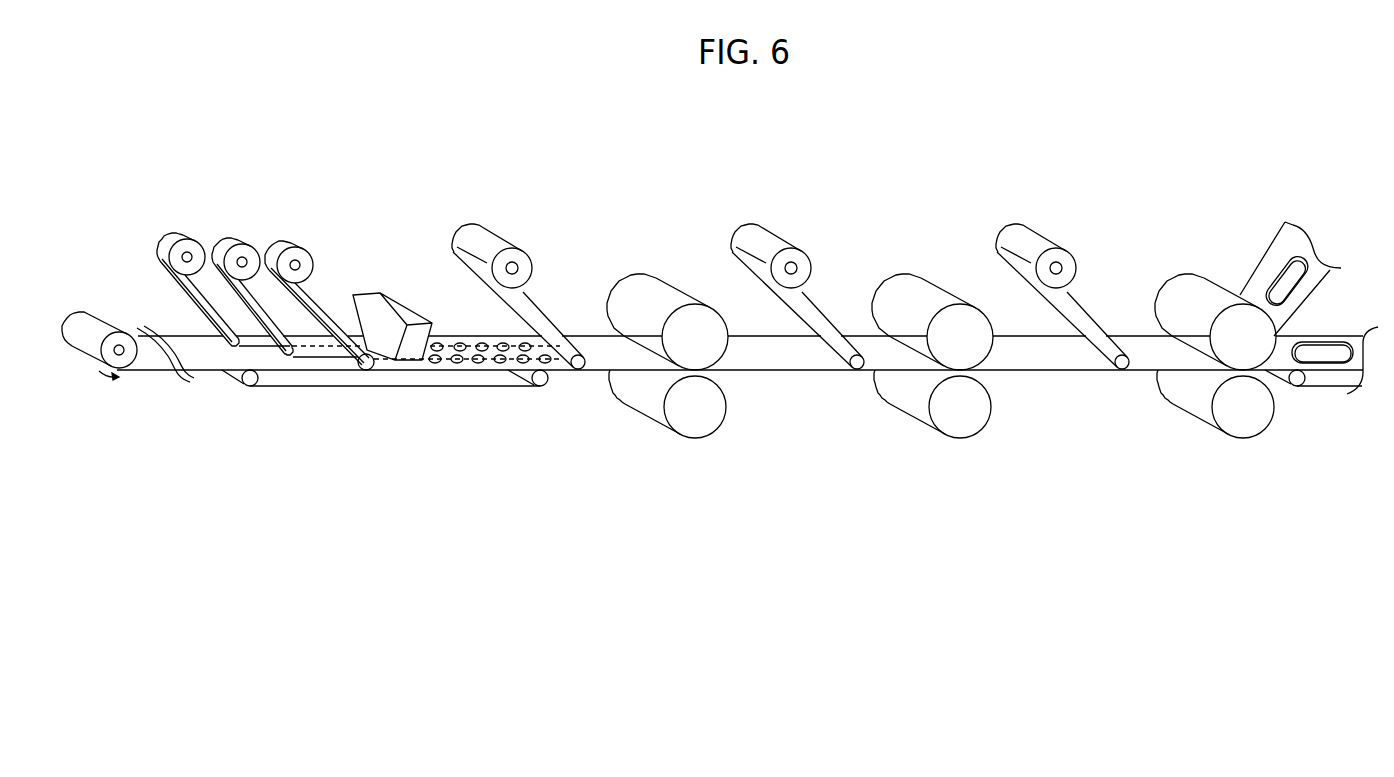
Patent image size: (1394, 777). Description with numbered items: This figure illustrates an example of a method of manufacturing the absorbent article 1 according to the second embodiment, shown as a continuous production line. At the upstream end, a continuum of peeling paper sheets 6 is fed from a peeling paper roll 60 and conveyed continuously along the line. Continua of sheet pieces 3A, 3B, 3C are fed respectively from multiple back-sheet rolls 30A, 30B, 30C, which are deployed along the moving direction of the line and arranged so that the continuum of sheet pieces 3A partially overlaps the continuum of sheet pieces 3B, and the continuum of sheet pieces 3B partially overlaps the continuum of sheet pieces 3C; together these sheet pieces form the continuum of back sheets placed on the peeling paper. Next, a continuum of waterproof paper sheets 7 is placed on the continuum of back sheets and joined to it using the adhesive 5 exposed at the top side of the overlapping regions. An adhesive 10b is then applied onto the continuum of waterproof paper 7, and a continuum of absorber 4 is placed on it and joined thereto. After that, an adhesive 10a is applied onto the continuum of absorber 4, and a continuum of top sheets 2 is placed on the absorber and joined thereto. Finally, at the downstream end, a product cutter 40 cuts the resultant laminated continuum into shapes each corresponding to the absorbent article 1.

The absorbent article 1 is at (1341, 346).
The continuum of top sheets 2 is at (1067, 308).
The continuum of sheet pieces 3A is at (178, 297).
The continuum of sheet pieces 3B is at (236, 307).
The continuum of sheet pieces 3C is at (312, 300).
The continuum of absorber 4 is at (802, 308).
The adhesive 5 is at (483, 345).
The continuum of peeling paper sheets 6 is at (149, 358).
The continuum of waterproof paper sheets 7 is at (524, 308).
The adhesive 10a is at (1018, 353).
The adhesive 10b is at (758, 353).
The back-sheet roll 30A is at (175, 234).
The back-sheet roll 30B is at (233, 239).
The back-sheet roll 30C is at (292, 241).
The product cutter 40 is at (1196, 290).
The peeling paper roll 60 is at (95, 322).